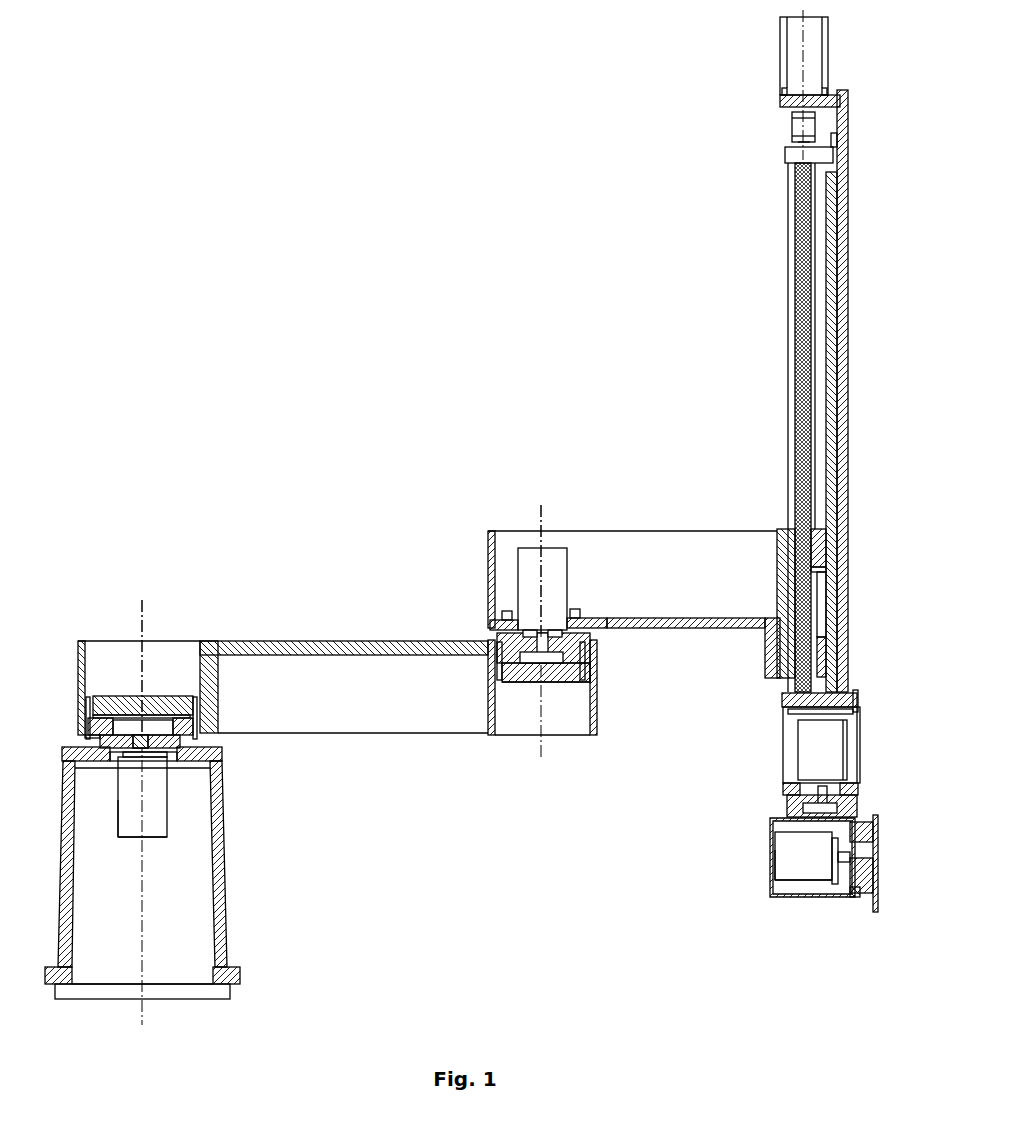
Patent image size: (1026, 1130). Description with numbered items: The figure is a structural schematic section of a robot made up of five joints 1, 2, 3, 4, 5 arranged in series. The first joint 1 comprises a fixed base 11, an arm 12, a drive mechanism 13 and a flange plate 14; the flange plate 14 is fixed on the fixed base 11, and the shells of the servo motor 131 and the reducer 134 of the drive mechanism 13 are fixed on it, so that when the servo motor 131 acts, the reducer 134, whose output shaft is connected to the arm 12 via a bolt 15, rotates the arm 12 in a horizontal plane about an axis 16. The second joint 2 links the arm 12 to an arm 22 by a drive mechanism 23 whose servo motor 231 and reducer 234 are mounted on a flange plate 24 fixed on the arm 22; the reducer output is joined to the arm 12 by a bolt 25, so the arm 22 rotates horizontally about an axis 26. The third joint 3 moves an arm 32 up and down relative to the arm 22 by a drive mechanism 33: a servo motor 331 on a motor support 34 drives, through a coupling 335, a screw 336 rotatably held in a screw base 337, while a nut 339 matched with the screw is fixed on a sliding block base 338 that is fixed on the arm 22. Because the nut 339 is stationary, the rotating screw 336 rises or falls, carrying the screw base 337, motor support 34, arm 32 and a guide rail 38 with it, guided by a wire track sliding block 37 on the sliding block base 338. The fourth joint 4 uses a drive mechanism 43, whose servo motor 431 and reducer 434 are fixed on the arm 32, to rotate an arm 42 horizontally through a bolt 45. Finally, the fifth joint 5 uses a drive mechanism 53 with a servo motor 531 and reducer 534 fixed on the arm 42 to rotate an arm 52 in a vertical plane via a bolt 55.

The joint 1 is at (111, 665).
The fixed base 11 is at (68, 848).
The arm 12 is at (267, 650).
The drive mechanism 13 is at (152, 790).
The servo motor 131 is at (156, 821).
The flange plate 14 is at (228, 752).
The bolt 15 is at (86, 705).
The reducer 134 is at (88, 722).
The axis 16 is at (143, 648).
The joint 2 is at (549, 648).
The arm 22 is at (703, 625).
The drive mechanism 23 is at (492, 623).
The servo motor 231 is at (556, 570).
The flange plate 24 is at (590, 632).
The reducer 234 is at (590, 668).
The bolt 25 is at (496, 672).
The axis 26 is at (538, 543).
The joint 3 is at (807, 364).
The arm 32 is at (845, 672).
The drive mechanism 33 is at (762, 427).
The servo motor 331 is at (795, 47).
The motor support 34 is at (784, 102).
The coupling 335 is at (800, 125).
The screw 336 is at (800, 222).
The screw base 337 is at (790, 157).
The sliding block base 338 is at (783, 530).
The nut 339 is at (822, 538).
The wire track sliding block 37 is at (822, 558).
The guide rail 38 is at (833, 455).
The joint 4 is at (803, 745).
The drive mechanism 43 is at (808, 738).
The servo motor 431 is at (836, 742).
The bolt 45 is at (798, 800).
The reducer 434 is at (858, 790).
The arm 42 is at (770, 820).
The joint 5 is at (812, 874).
The arm 52 is at (878, 855).
The drive mechanism 53 is at (784, 852).
The servo motor 531 is at (789, 872).
The reducer 534 is at (875, 887).
The bolt 55 is at (857, 890).